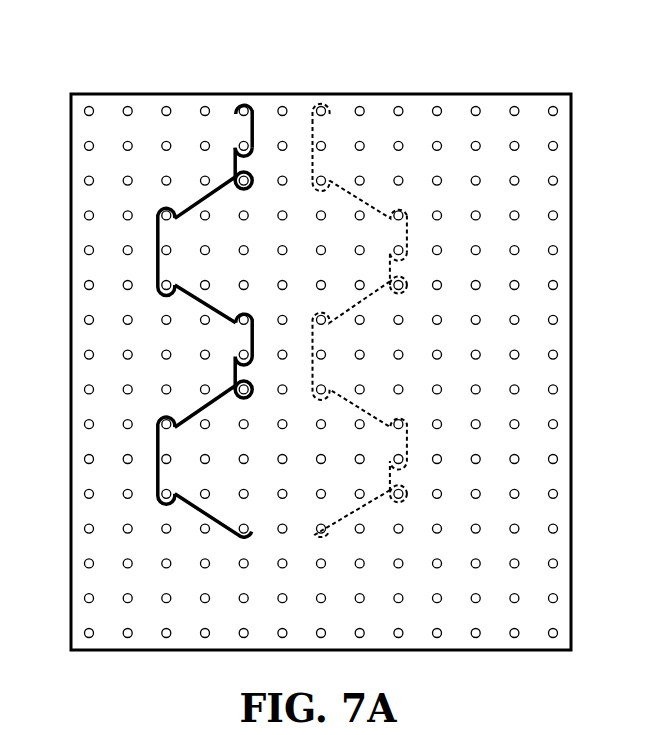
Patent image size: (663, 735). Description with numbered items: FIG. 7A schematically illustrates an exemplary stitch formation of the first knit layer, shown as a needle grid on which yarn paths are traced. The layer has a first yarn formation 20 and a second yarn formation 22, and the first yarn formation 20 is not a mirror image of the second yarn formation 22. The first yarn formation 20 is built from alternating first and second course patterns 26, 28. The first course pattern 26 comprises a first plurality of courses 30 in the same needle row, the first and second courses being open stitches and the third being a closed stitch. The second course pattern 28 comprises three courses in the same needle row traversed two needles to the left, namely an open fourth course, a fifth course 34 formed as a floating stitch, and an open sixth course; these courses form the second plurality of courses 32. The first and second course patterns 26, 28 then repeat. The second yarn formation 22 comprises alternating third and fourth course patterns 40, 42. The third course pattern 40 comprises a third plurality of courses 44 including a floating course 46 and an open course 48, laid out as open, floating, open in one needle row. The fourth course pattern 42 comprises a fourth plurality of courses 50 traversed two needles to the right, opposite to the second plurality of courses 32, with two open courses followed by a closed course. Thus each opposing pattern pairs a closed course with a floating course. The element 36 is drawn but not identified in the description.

The first yarn formation 20 is at (246, 97).
The second yarn formation 22 is at (339, 82).
The first course pattern 26 is at (235, 137).
The second course pattern 28 is at (148, 238).
The first plurality of courses 30 is at (228, 150).
The second plurality of courses 32 is at (135, 269).
The fifth course 34 is at (161, 257).
The connecting wire segments 36 is at (179, 228).
The third course pattern 40 is at (348, 133).
The fourth course pattern 42 is at (434, 232).
The third plurality of courses 44 is at (375, 158).
The floating course 46 is at (332, 158).
The open course 48 is at (332, 104).
The fourth plurality of courses 50 is at (413, 267).